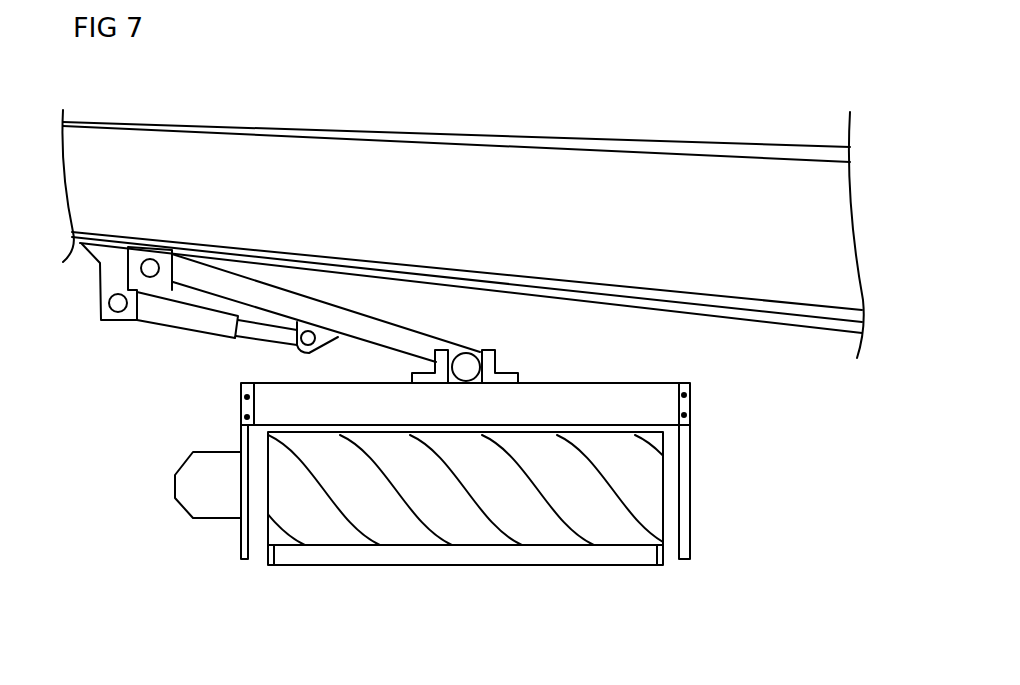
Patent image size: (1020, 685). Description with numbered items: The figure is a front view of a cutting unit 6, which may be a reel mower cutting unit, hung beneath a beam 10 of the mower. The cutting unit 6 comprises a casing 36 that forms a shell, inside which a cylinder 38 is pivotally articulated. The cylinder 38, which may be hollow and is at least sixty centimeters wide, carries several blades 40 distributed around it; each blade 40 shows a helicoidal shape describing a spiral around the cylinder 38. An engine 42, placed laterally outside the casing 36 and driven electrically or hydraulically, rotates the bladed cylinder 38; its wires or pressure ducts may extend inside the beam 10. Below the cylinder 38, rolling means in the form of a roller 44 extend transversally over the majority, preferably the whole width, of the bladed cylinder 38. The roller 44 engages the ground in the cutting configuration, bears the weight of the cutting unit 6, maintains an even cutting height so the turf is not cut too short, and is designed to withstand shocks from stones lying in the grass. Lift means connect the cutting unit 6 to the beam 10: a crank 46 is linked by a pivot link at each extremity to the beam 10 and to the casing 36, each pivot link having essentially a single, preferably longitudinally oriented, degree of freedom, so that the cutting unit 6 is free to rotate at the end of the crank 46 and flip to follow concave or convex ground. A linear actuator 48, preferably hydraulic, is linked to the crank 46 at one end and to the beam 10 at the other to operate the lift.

The cutting unit 6 is at (730, 491).
The beam 10 is at (432, 183).
The casing 36 is at (562, 408).
The cylinder 38 is at (420, 505).
The blade 40 is at (320, 506).
The engine 42 is at (182, 503).
The roller 44 is at (503, 556).
The crank 46 is at (400, 355).
The actuator 48 is at (198, 331).